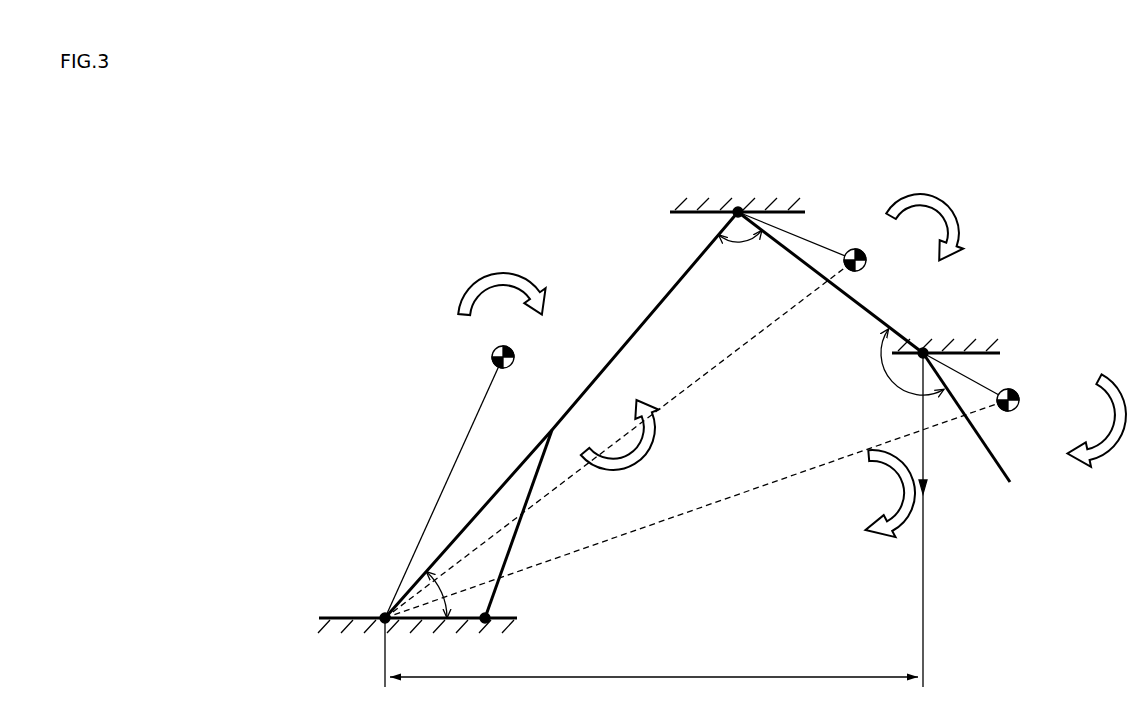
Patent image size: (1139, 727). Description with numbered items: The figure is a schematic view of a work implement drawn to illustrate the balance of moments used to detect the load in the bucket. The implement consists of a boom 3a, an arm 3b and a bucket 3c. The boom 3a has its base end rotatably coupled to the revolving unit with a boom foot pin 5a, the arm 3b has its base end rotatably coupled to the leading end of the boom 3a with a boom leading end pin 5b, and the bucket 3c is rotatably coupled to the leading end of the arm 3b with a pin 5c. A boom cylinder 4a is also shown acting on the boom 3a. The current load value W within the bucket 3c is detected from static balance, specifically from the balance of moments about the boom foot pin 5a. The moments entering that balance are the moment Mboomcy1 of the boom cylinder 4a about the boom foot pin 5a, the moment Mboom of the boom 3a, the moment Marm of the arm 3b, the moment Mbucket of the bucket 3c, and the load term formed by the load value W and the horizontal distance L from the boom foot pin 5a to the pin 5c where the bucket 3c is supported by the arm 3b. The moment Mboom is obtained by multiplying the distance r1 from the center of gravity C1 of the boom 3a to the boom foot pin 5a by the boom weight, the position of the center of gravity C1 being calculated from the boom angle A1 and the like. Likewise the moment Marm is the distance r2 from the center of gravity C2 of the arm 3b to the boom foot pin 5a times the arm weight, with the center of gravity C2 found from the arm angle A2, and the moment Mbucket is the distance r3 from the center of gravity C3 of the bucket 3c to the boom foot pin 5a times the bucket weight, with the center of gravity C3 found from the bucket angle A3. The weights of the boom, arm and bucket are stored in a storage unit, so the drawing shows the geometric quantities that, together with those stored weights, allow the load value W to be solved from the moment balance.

The boom 3a is at (586, 389).
The arm 3b is at (866, 306).
The bucket 3c is at (996, 456).
The boom cylinder 4a is at (493, 602).
The boom foot pin 5a is at (384, 613).
The boom leading end pin 5b is at (740, 207).
The pin 5c is at (928, 346).
The center of gravity of boom C1 is at (488, 357).
The center of gravity of arm C2 is at (802, 241).
The center of gravity of bucket C3 is at (981, 382).
The distance from center of gravity of boom to boom foot pin r1 is at (444, 487).
The distance from center of gravity of arm to boom foot pin r2 is at (620, 439).
The distance from center of gravity of bucket to boom foot pin r3 is at (696, 509).
The boom angle A1 is at (450, 593).
The arm angle A2 is at (740, 248).
The bucket angle A3 is at (904, 368).
The moment of boom Mboom is at (501, 305).
The moment of arm Marm is at (919, 230).
The moment of bucket Mbucket is at (1074, 420).
The moment of boom cylinder Mboomcy1 is at (659, 443).
The current load value W is at (880, 520).
The horizontal distance L is at (651, 655).